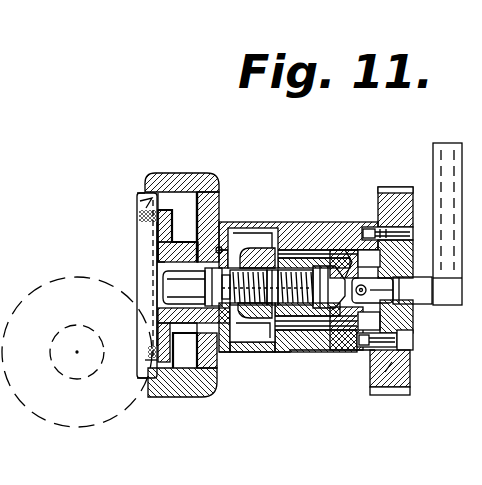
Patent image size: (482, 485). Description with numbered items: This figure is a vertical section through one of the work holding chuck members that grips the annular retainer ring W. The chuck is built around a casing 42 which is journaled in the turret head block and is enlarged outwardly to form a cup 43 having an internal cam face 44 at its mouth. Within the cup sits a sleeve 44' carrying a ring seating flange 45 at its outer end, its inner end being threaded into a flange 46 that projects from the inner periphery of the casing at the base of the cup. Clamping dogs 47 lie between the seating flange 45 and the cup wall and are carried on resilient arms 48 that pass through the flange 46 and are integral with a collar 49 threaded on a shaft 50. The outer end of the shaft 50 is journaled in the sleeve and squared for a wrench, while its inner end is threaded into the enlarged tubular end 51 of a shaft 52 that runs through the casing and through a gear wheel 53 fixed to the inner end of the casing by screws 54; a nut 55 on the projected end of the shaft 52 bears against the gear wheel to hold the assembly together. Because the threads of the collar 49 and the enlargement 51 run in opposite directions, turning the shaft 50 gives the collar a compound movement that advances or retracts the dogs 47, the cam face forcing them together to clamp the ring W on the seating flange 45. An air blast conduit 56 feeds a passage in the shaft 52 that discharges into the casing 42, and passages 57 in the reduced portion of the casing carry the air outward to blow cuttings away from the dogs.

The annular band or ring W is at (138, 207).
The casing 42 is at (330, 336).
The cup 43 is at (200, 380).
The internal cam face 44 is at (182, 416).
The sleeve 44' is at (119, 240).
The ring seating flange 45 is at (157, 232).
The flange 46 is at (222, 248).
The clamping dogs 47 is at (141, 201).
The resilient arms 48 is at (250, 252).
The collar 49 is at (270, 233).
The shaft 50 is at (128, 297).
The enlarged tubular end 51 is at (326, 318).
The shaft 52 is at (400, 324).
The gear wheel 53 is at (392, 368).
The screws 54 is at (394, 352).
The nut 55 is at (425, 309).
The air blast conduit 56 is at (448, 158).
The passages 57 is at (326, 253).